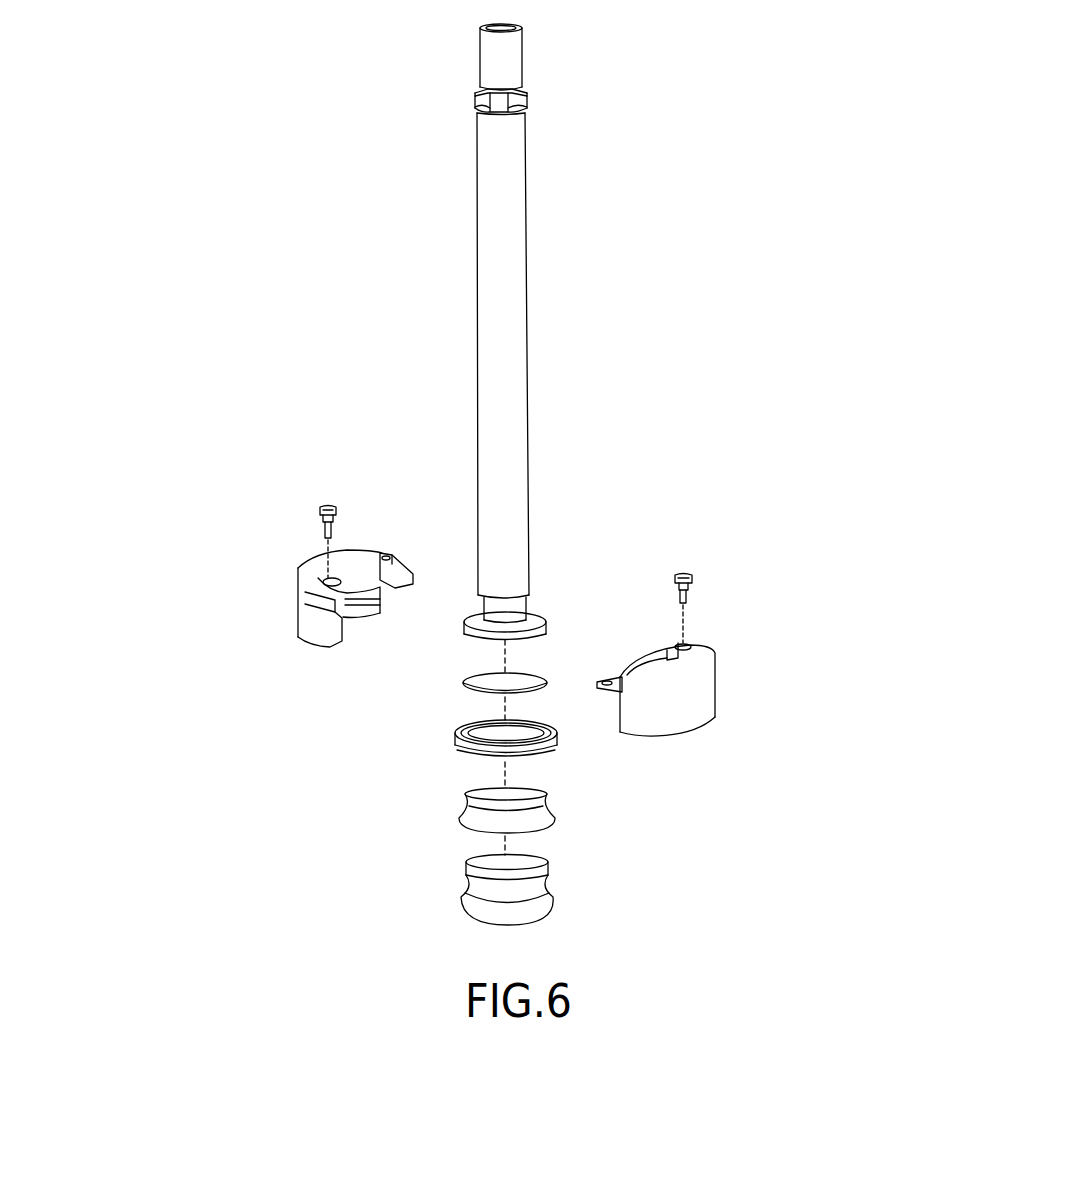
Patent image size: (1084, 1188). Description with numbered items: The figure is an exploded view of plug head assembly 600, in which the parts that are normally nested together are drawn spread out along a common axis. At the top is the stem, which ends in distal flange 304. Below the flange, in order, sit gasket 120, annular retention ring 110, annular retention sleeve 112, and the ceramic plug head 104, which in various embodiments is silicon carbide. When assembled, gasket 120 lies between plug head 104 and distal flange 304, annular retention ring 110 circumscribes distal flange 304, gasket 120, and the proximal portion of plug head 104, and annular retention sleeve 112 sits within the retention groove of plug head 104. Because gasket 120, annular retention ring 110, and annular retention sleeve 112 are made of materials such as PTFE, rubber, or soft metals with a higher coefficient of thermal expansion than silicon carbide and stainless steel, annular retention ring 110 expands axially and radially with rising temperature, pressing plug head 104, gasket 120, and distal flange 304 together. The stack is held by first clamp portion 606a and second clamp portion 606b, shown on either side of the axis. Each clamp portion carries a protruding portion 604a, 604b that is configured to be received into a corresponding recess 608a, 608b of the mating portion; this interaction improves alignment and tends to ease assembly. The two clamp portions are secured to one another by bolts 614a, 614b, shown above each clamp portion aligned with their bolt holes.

The plug head assembly 600 is at (595, 133).
The distal flange 304 is at (544, 614).
The gasket 120 is at (507, 687).
The annular retention ring 110 is at (512, 759).
The annular retention sleeve 112 is at (523, 822).
The plug head 104 is at (515, 905).
The protruding portion 604a is at (633, 662).
The protruding portion 604b is at (415, 576).
The first clamp portion 606a is at (715, 653).
The second clamp portion 606b is at (360, 545).
The recess 608a is at (695, 643).
The recess 608b is at (313, 603).
The fastener 614a is at (685, 570).
The fastener 614b is at (333, 503).